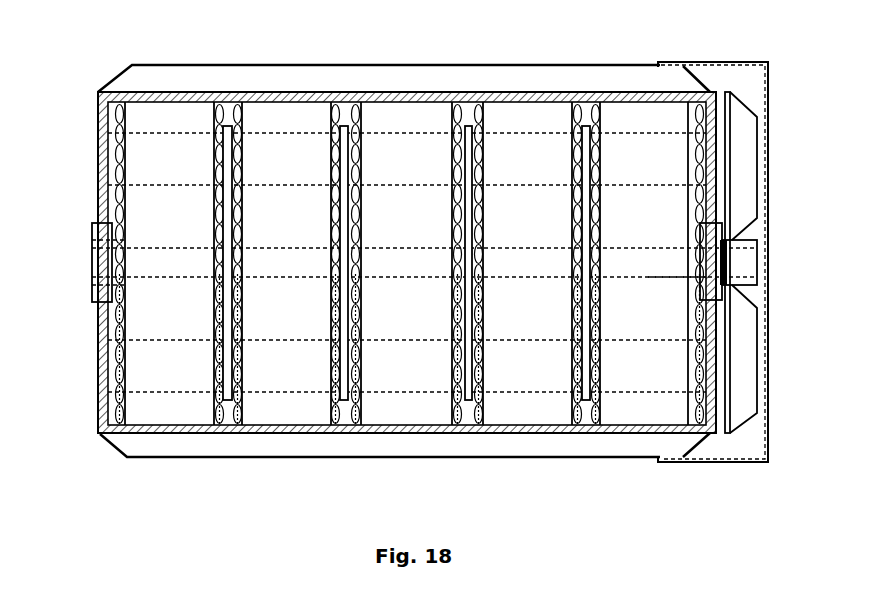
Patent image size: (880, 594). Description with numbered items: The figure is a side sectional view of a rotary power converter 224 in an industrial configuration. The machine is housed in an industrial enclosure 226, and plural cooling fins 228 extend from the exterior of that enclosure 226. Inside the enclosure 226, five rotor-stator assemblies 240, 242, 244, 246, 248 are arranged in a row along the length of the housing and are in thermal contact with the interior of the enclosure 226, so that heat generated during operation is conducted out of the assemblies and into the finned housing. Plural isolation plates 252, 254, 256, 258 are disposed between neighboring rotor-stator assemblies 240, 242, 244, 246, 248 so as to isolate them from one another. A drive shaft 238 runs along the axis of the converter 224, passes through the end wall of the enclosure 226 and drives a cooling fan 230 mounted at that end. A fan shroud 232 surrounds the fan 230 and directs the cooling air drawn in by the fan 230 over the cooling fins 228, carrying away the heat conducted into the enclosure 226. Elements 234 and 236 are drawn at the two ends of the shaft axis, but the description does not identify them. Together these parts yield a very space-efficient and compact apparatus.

The rotary power converter 224 is at (96, 526).
The industrial enclosure 226 is at (98, 350).
The cooling fins 228 is at (132, 65).
The cooling fan 230 is at (732, 186).
The fan shroud 232 is at (768, 110).
The first terminal 234 is at (92, 243).
The second terminal 236 is at (703, 242).
The drive shaft 238 is at (648, 277).
The rotor-stator assembly 240 is at (258, 263).
The rotor-stator assembly 242 is at (380, 263).
The rotor-stator assembly 244 is at (497, 263).
The rotor-stator assembly 246 is at (621, 263).
The rotor-stator assembly 248 is at (711, 92).
The isolation plate 252 is at (226, 400).
The isolation plate 254 is at (344, 400).
The isolation plate 256 is at (468, 400).
The isolation plate 258 is at (586, 400).